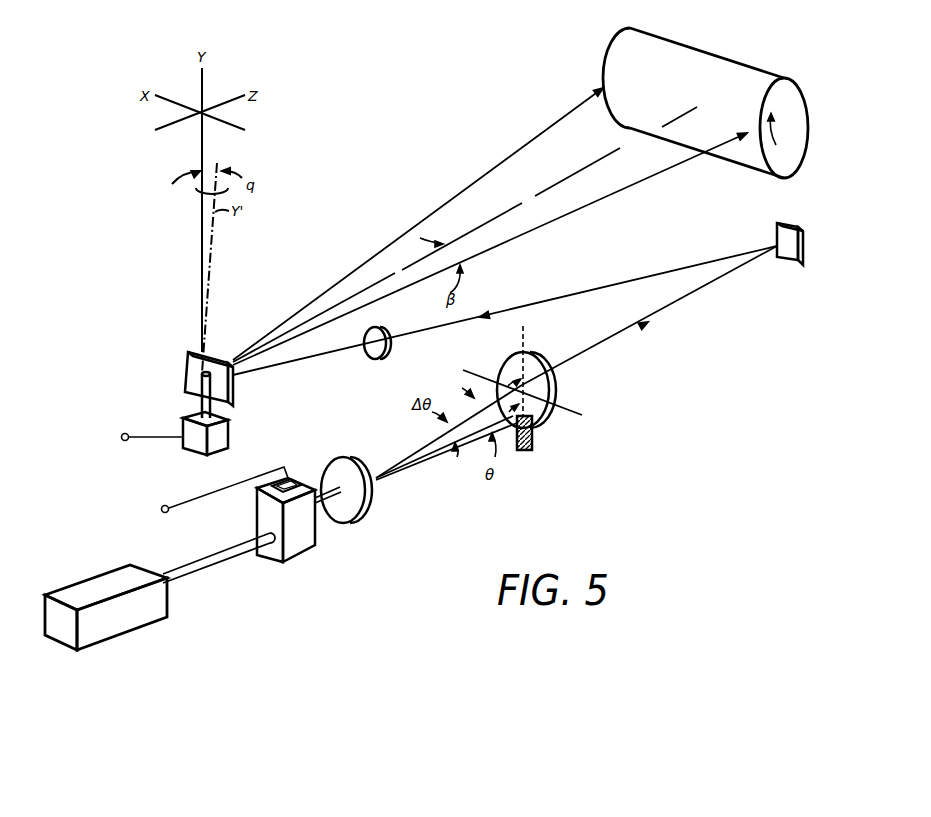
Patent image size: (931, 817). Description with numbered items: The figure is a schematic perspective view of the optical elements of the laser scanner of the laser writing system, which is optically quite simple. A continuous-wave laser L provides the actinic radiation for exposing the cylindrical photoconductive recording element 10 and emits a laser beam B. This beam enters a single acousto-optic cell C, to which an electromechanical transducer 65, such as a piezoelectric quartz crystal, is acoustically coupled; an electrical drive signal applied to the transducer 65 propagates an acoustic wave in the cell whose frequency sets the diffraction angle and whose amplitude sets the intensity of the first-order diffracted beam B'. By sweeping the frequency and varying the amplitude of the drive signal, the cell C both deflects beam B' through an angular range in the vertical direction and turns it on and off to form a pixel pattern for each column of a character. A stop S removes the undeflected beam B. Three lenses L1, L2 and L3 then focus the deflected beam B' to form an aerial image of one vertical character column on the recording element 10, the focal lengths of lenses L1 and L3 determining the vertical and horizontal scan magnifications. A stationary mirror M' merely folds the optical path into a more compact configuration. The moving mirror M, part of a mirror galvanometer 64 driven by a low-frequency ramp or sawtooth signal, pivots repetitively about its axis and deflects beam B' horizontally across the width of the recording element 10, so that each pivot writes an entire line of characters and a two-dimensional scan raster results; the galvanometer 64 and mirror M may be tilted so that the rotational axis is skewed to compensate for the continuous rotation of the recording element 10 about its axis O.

The photoconductive recording element 10 is at (741, 78).
The mirror galvanometer 64 is at (229, 424).
The electromechanical transducer 65 is at (292, 478).
The moving mirror M is at (196, 381).
The stationary mirror M' is at (790, 259).
The continuous-wave laser L is at (121, 624).
The acousto-optic cell C is at (301, 535).
The first lens L1 is at (365, 516).
The second lens L2 is at (554, 386).
The third lens L3 is at (378, 357).
The stop S is at (533, 440).
The laser beam B is at (340, 499).
The intensity-modulated deflected beam B' is at (505, 283).
The drum axis O is at (622, 150).